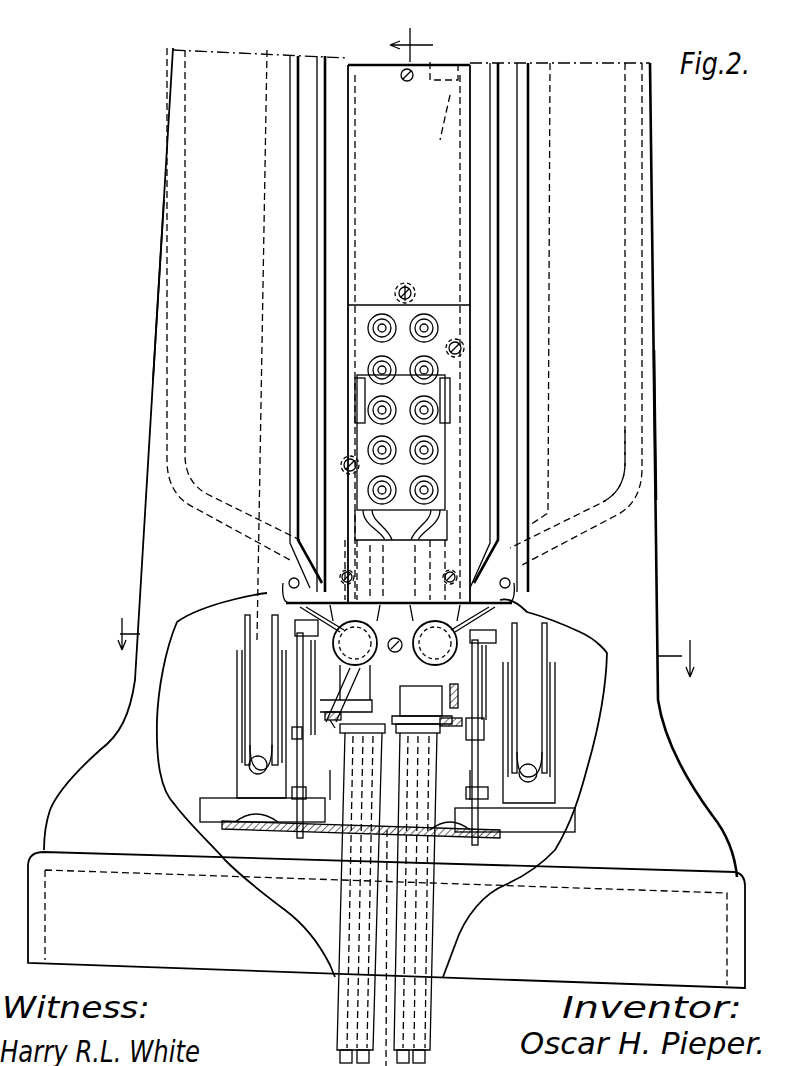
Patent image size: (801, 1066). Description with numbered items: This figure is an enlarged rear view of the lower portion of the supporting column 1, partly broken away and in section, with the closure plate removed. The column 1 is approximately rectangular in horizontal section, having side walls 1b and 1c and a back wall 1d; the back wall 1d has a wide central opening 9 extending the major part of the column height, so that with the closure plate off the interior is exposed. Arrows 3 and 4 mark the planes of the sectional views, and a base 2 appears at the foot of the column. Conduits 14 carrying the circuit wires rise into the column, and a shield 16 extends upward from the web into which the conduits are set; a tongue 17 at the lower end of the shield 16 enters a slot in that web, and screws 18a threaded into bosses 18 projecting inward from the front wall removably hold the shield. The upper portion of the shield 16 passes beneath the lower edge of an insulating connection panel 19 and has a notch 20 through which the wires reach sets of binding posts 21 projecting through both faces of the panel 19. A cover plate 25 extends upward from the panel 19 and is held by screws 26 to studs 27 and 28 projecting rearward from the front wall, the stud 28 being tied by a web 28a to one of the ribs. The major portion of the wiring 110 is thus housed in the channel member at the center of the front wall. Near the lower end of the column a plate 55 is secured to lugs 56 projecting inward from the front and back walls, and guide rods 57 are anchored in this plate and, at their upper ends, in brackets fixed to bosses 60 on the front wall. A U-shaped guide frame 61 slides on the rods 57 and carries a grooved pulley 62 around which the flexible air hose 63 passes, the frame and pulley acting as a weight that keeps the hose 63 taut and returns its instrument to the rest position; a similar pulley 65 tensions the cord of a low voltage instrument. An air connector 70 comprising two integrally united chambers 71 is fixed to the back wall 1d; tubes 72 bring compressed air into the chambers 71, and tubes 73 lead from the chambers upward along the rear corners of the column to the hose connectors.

The column 1 is at (669, 326).
The side wall 1b is at (658, 421).
The side wall 1c is at (153, 413).
The back wall 1d is at (594, 451).
The base 2 is at (36, 860).
The section line 3 is at (411, 33).
The section line 4 is at (404, 647).
The opening 9 is at (515, 231).
The conduits 14 is at (346, 1011).
The shield 16 is at (432, 538).
The tongue 17 is at (360, 749).
The bosses 18 is at (415, 740).
The screws 18a is at (398, 597).
The connection panel 19 is at (356, 315).
The notch 20 is at (402, 535).
The binding posts 21 is at (420, 378).
The cover plate 25 is at (409, 332).
The screws 26 is at (410, 82).
The stud 27 is at (406, 285).
The stud 28 is at (404, 82).
The web 28a is at (445, 124).
The plate 55 is at (282, 830).
The lugs 56 is at (212, 793).
The guide rods 57 is at (316, 272).
The bosses 60 is at (300, 789).
The guide frame 61 is at (236, 750).
The pulley 62 is at (241, 710).
The air hose 63 is at (250, 614).
The pulley 65 is at (297, 677).
The air connector 70 is at (391, 682).
The chambers 71 is at (395, 635).
The tubes 72 is at (341, 726).
The tubes 73 is at (188, 251).
The wiring 110 is at (452, 173).